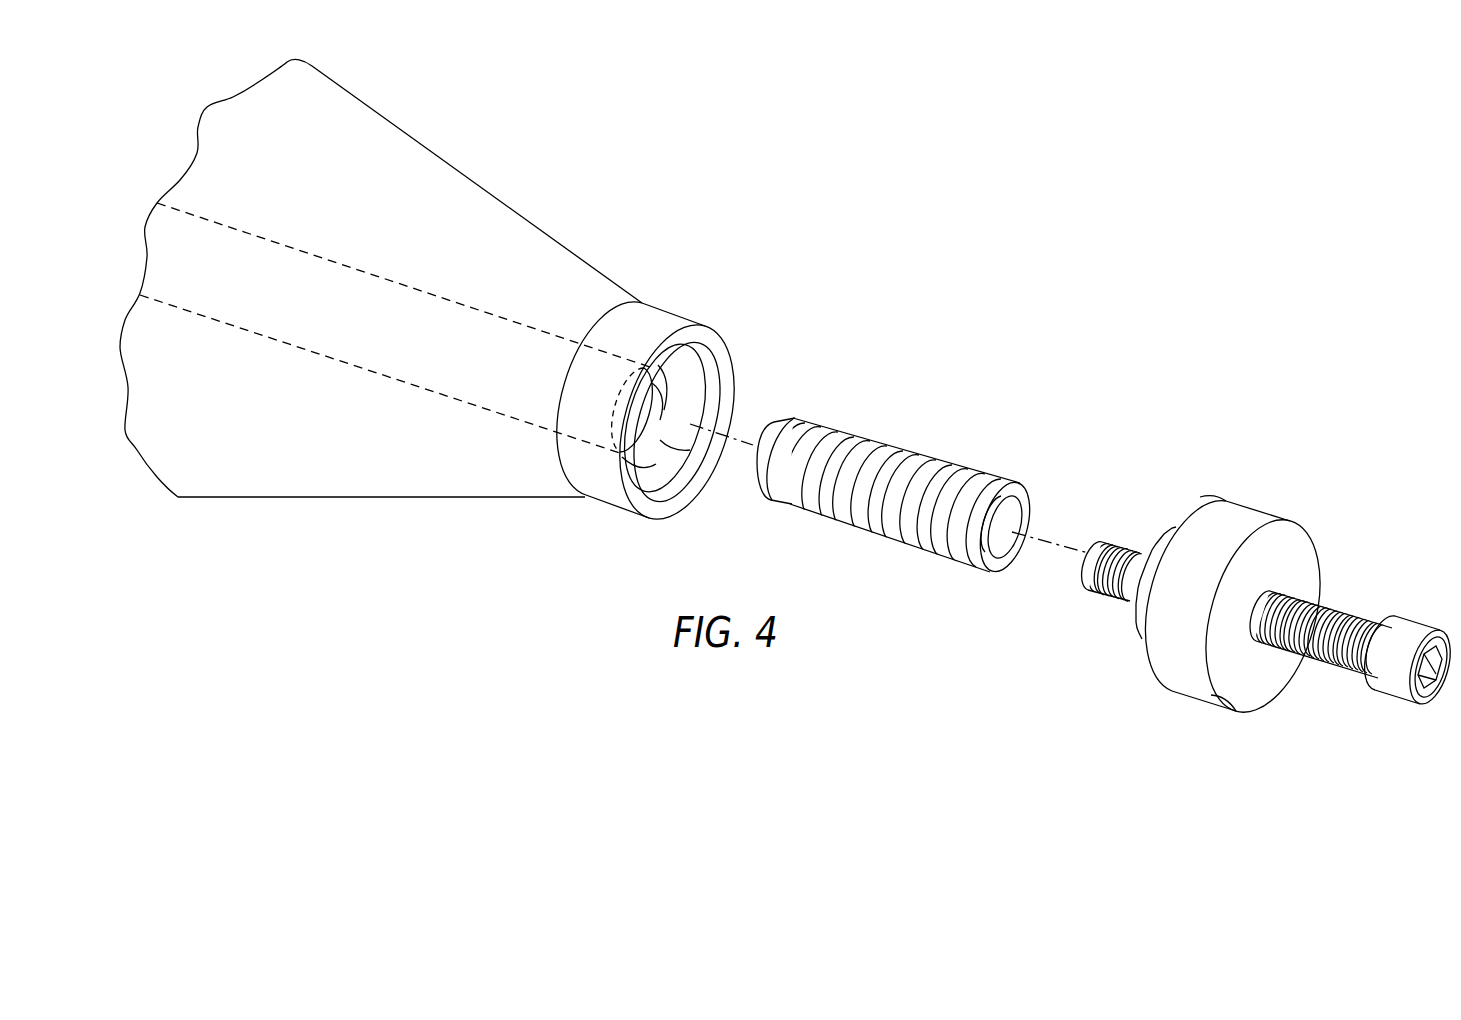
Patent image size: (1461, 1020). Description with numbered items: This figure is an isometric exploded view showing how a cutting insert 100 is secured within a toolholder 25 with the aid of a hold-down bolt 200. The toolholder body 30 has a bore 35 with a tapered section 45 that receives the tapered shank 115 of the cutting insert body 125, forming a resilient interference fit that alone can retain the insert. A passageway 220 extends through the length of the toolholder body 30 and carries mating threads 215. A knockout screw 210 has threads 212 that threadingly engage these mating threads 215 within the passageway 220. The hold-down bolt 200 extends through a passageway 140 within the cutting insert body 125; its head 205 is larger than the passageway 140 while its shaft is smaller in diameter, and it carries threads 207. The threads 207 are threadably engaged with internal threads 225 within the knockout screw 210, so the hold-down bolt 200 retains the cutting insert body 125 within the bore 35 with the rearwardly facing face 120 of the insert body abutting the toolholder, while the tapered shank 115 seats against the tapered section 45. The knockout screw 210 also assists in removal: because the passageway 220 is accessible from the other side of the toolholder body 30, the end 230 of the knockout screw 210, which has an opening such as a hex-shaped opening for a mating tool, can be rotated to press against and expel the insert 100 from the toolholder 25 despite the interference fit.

The toolholder 25 is at (473, 178).
The toolholder body 30 is at (556, 238).
The bore 35 is at (676, 458).
The tapered section 45 is at (622, 470).
The passageway 220 is at (302, 252).
The mating threads 215 is at (665, 387).
The knockout screw 210 is at (880, 440).
The threads 212 is at (828, 420).
The internal threads 225 is at (1012, 505).
The end 230 is at (757, 458).
The threads 207 is at (1092, 572).
The cutting insert 100 is at (1248, 510).
The rearwardly facing face 120 is at (1198, 505).
The cutting insert body 125 is at (1193, 683).
The tapered shank 115 is at (1140, 603).
The passageway 140 is at (1272, 598).
The hold-down bolt 200 is at (1343, 665).
The head 205 is at (1416, 620).